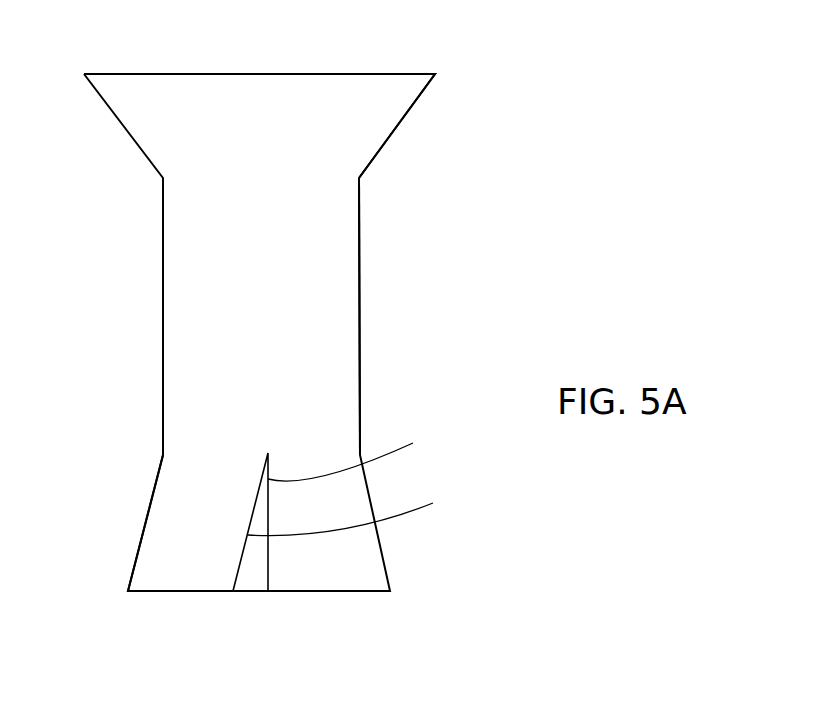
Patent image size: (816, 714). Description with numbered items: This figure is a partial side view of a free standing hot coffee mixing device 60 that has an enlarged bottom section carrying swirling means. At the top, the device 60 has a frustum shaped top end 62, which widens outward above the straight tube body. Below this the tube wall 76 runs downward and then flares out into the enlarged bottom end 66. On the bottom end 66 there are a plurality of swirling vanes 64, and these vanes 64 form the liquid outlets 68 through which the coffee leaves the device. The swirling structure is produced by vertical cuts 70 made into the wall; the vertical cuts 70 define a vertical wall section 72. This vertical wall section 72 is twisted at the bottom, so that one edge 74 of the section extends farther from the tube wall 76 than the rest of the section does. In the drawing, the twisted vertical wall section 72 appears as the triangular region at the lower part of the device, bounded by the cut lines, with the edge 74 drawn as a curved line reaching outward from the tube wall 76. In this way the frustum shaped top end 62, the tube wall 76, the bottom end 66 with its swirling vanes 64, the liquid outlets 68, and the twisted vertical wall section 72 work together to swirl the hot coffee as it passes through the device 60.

The hot coffee mixing device 60 is at (468, 279).
The frustum shaped top end 62 is at (470, 105).
The swirling vanes 64 is at (168, 591).
The bottom end 66 is at (163, 435).
The liquid outlets 68 is at (252, 573).
The vertical cuts 70 is at (367, 445).
The vertical wall section 72 is at (206, 537).
The edge 74 is at (365, 506).
The tube wall 76 is at (273, 318).